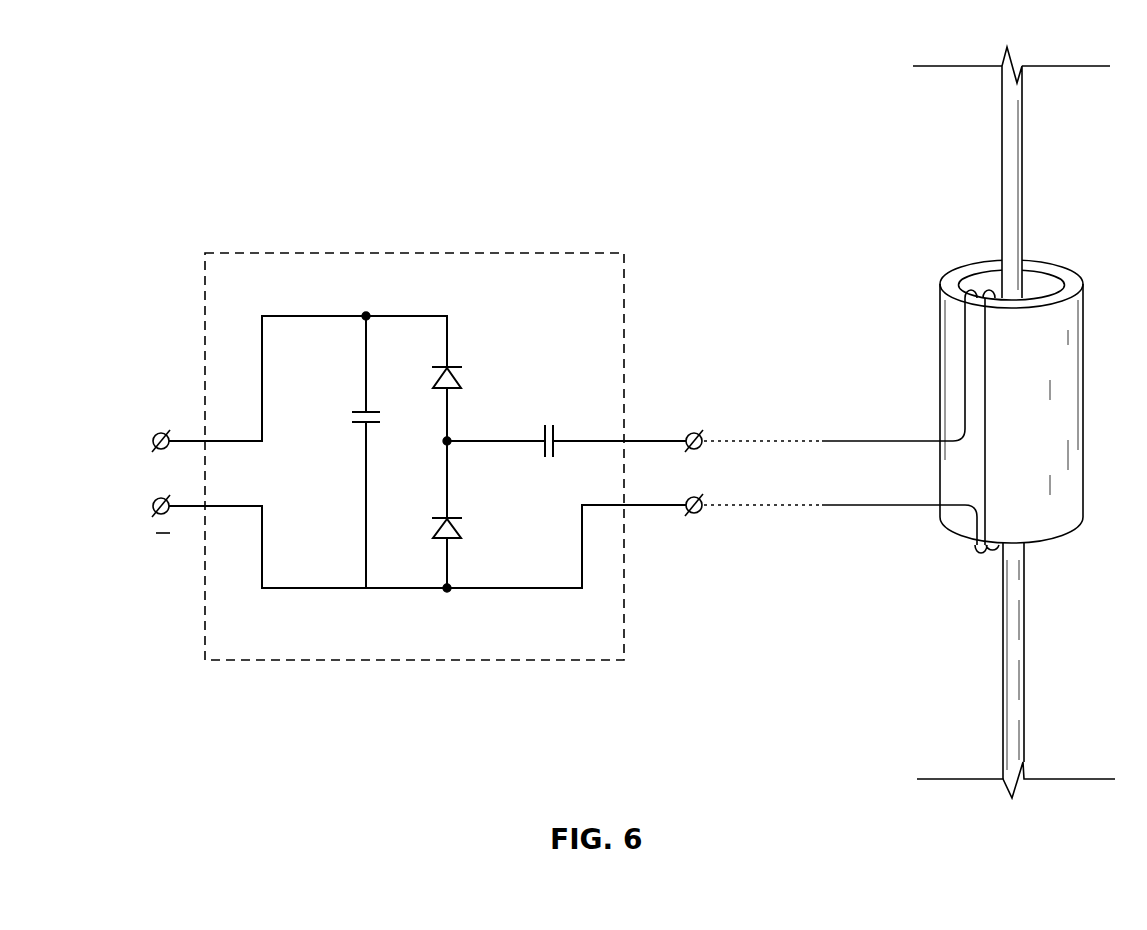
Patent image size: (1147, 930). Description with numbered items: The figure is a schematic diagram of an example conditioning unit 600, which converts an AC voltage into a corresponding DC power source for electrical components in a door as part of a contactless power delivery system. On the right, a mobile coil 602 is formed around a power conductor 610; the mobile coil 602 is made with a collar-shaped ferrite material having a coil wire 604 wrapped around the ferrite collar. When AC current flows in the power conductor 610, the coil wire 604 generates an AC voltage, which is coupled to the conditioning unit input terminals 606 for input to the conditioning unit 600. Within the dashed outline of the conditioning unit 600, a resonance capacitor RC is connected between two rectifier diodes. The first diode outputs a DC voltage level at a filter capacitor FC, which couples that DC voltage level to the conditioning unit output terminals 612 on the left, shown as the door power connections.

The conditioning unit 600 is at (582, 331).
The mobile coil 602 is at (1046, 442).
The coil wire 604 is at (948, 392).
The conditioning unit input terminals 606 is at (710, 396).
The power conductor 610 is at (1010, 178).
The conditioning unit output terminals 612 is at (133, 473).